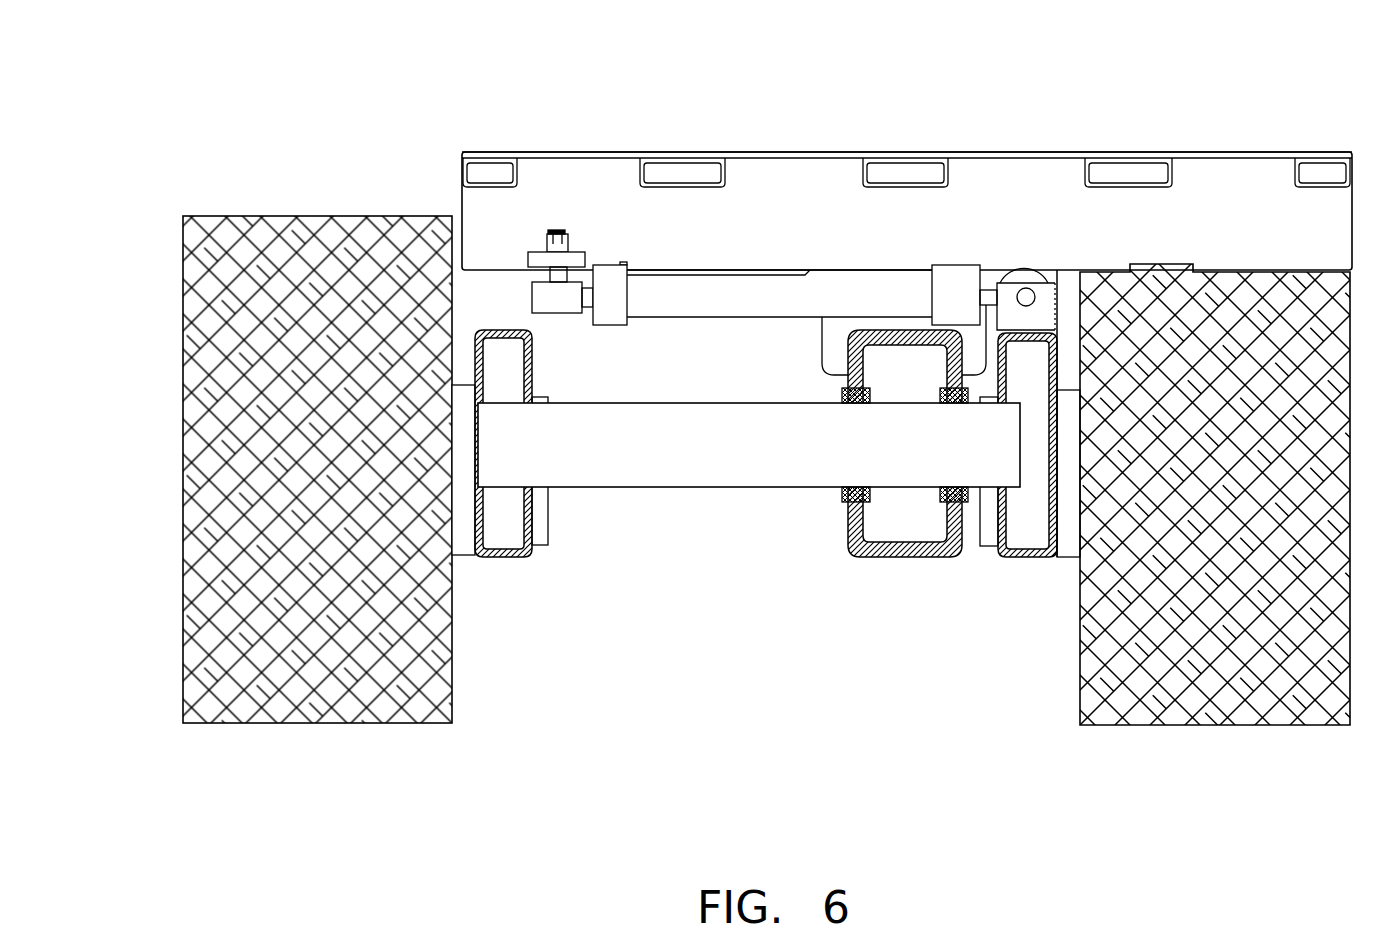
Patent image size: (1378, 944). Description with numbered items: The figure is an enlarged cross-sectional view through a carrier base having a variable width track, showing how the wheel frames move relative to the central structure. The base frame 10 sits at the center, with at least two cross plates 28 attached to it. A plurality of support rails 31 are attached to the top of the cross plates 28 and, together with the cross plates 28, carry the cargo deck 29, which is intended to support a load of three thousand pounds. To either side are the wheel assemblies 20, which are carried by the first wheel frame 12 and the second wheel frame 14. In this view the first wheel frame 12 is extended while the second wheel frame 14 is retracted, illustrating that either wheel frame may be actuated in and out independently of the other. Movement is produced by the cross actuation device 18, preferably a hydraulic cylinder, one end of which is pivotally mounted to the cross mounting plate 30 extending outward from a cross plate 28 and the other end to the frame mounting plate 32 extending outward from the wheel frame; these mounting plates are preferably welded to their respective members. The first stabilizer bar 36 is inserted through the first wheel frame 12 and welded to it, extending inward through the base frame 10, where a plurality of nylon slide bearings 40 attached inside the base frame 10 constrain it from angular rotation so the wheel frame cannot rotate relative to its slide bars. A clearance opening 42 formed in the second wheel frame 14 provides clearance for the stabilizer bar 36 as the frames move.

The base frame 10 is at (858, 558).
The first wheel frame 12 is at (520, 558).
The second wheel frame 14 is at (1037, 557).
The cross actuation device 18 is at (854, 272).
The wheel assemblies 20 is at (478, 662).
The cross plates 28 is at (798, 210).
The cargo deck 29 is at (1200, 150).
The cross mounting plate 30 is at (581, 252).
The support rails 31 is at (490, 165).
The frame mounting plate 32 is at (1008, 283).
The first stabilizer bar 36 is at (651, 468).
The slide bearings 40 is at (842, 493).
The clearance opening 42 is at (992, 493).